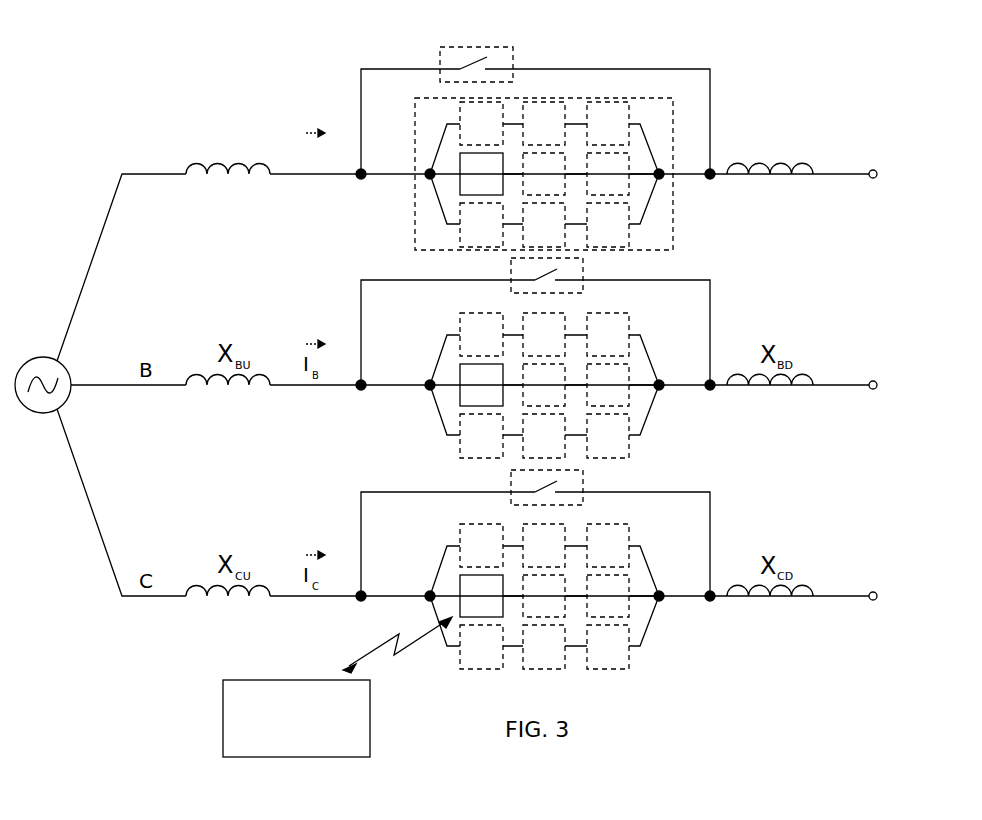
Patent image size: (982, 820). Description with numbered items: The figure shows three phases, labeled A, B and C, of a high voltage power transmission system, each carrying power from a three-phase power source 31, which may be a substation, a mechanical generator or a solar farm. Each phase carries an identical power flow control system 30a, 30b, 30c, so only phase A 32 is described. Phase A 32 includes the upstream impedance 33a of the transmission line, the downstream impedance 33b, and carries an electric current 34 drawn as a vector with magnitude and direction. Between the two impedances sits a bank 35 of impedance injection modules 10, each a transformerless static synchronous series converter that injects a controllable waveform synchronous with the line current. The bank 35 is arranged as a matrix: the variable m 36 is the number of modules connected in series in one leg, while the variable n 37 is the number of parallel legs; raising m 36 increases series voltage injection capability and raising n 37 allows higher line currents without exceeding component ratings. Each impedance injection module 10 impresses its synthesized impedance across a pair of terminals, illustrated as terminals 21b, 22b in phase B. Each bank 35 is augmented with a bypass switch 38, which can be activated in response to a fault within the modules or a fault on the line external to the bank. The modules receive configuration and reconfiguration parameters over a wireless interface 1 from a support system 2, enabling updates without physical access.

The wireless interface 1 is at (222, 702).
The support system 2 is at (397, 645).
The impedance injection module 10 is at (481, 174).
The terminal 21b is at (444, 389).
The terminal 22b is at (514, 389).
The power flow control system 30a is at (630, 128).
The power flow control system 30b is at (545, 355).
The power flow control system 30c is at (695, 520).
The three-phase power source 31 is at (33, 356).
The phase A 32 is at (138, 151).
The upstream impedance 33a is at (237, 128).
The downstream impedance 33b is at (785, 136).
The electric current 34 is at (313, 124).
The bank of impedance injection modules 35 is at (635, 129).
The variable m 36 is at (526, 127).
The variable n 37 is at (434, 160).
The bypass switch 38 is at (462, 47).